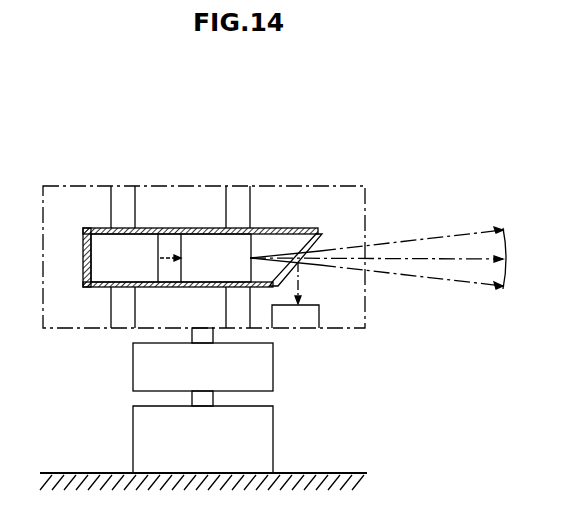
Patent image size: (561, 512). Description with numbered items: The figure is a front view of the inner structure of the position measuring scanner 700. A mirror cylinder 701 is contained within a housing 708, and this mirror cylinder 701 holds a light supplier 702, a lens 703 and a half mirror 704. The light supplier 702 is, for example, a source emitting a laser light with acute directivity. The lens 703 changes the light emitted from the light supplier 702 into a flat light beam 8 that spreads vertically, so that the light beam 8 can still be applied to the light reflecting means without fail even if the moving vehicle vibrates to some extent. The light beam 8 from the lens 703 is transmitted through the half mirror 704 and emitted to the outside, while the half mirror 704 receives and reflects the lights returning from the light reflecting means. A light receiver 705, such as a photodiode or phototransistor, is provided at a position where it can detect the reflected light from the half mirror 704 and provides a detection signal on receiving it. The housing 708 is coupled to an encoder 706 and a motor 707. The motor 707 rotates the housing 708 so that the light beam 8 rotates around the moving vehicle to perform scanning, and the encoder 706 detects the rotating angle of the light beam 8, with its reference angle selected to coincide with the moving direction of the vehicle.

The position measuring scanner 700 is at (167, 157).
The mirror cylinder 701 is at (168, 228).
The light supplier 702 is at (92, 279).
The lens 703 is at (206, 278).
The half mirror 704 is at (306, 242).
The light receiver 705 is at (300, 318).
The encoder 706 is at (273, 377).
The motor 707 is at (273, 437).
The housing 708 is at (282, 186).
The light beam 8 is at (403, 241).